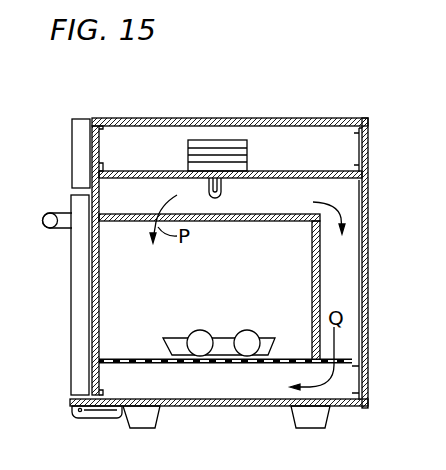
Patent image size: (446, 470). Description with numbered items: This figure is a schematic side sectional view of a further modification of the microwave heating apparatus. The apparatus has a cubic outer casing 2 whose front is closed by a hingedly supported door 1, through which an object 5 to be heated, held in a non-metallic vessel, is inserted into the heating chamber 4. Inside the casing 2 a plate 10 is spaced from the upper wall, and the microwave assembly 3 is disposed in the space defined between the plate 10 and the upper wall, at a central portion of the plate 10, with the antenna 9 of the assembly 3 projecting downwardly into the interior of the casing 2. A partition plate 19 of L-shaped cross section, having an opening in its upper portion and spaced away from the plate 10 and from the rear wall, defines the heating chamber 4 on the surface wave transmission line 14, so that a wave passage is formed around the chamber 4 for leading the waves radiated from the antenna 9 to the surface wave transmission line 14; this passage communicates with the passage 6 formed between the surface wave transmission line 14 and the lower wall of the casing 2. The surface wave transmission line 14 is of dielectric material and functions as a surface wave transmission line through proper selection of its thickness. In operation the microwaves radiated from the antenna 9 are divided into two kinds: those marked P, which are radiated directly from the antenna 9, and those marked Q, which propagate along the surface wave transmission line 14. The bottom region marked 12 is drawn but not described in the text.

The door 1 is at (80, 296).
The outer casing 2 is at (351, 119).
The microwave assembly 3 is at (238, 155).
The heating chamber 4 is at (234, 283).
The object to be heated 5 is at (251, 337).
The passage 6 is at (342, 285).
The antenna 9 is at (221, 190).
The plate 10 is at (292, 171).
The bottom wall 12 is at (240, 406).
The surface wave transmission line 14 is at (136, 358).
The partition plate 19 is at (295, 221).